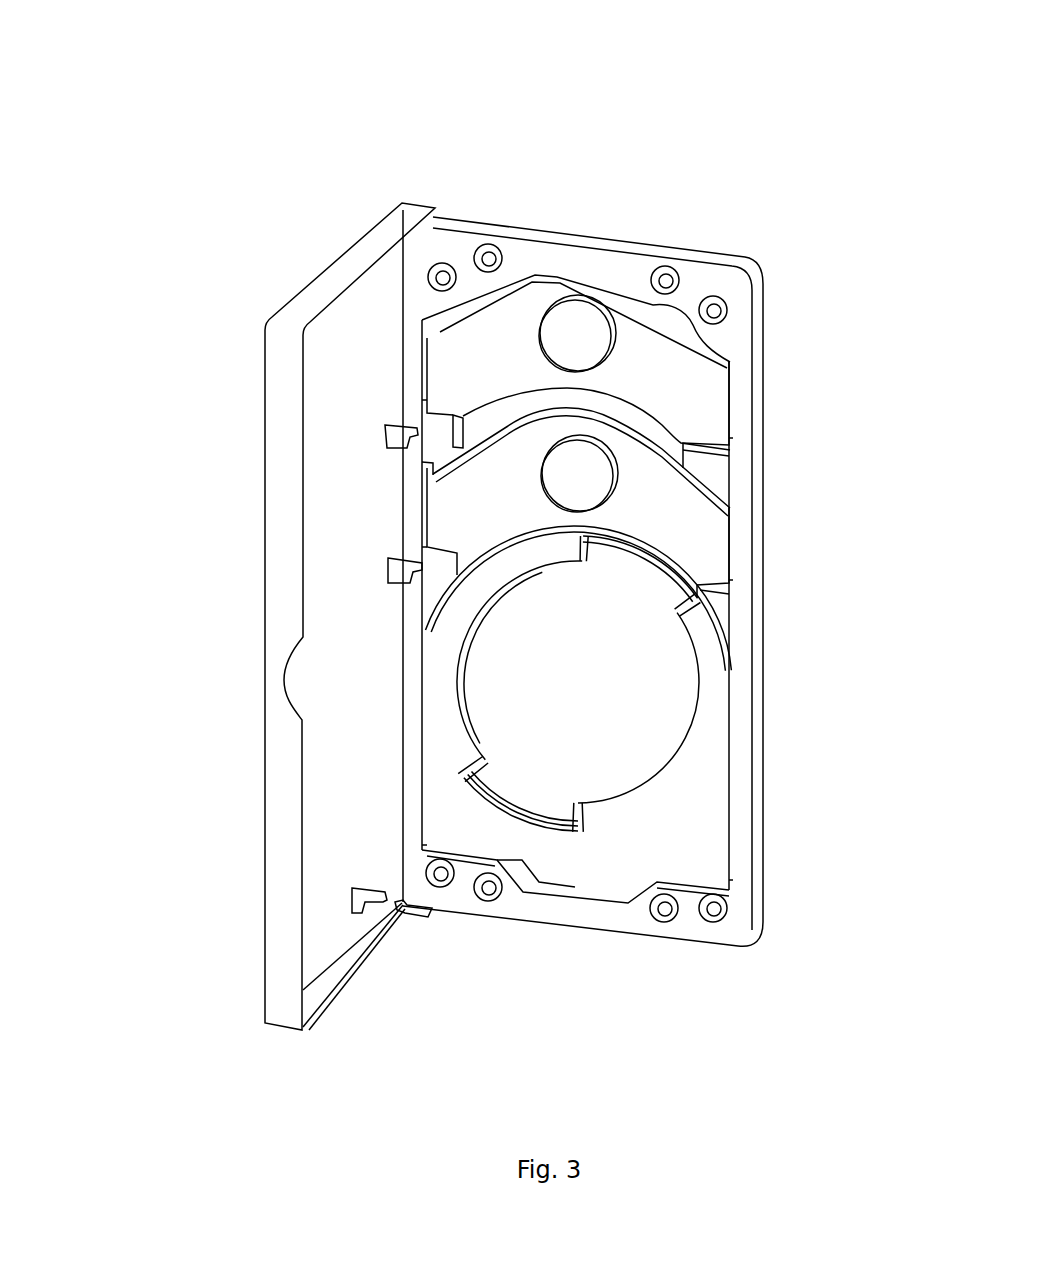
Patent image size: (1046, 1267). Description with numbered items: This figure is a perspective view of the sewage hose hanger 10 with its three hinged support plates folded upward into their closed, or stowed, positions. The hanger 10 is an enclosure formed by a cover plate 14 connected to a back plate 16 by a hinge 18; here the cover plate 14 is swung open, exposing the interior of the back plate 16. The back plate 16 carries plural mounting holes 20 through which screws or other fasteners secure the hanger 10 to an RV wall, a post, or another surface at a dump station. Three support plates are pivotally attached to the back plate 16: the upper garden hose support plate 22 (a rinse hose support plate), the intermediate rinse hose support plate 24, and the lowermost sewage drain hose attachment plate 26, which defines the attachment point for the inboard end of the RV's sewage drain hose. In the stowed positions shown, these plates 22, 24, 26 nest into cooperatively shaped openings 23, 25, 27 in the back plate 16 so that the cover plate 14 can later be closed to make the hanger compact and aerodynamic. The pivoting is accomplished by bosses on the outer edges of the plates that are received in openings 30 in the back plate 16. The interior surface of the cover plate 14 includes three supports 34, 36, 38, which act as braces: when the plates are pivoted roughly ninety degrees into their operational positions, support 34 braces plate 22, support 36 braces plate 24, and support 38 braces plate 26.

The sewage hose hanger 10 is at (782, 134).
The cover plate 14 is at (322, 283).
The back plate 16 is at (758, 672).
The hinge 18 is at (405, 902).
The mounting holes 20 is at (488, 258).
The upper garden hose support plate 22 is at (548, 371).
The opening 23 is at (576, 332).
The intermediate support plate 24 is at (459, 502).
The opening 25 is at (576, 472).
The sewage drain hose attachment plate 26 is at (489, 679).
The opening 27 is at (580, 684).
The openings 30 is at (427, 400).
The support 34 is at (395, 437).
The support 36 is at (397, 577).
The support 38 is at (365, 907).